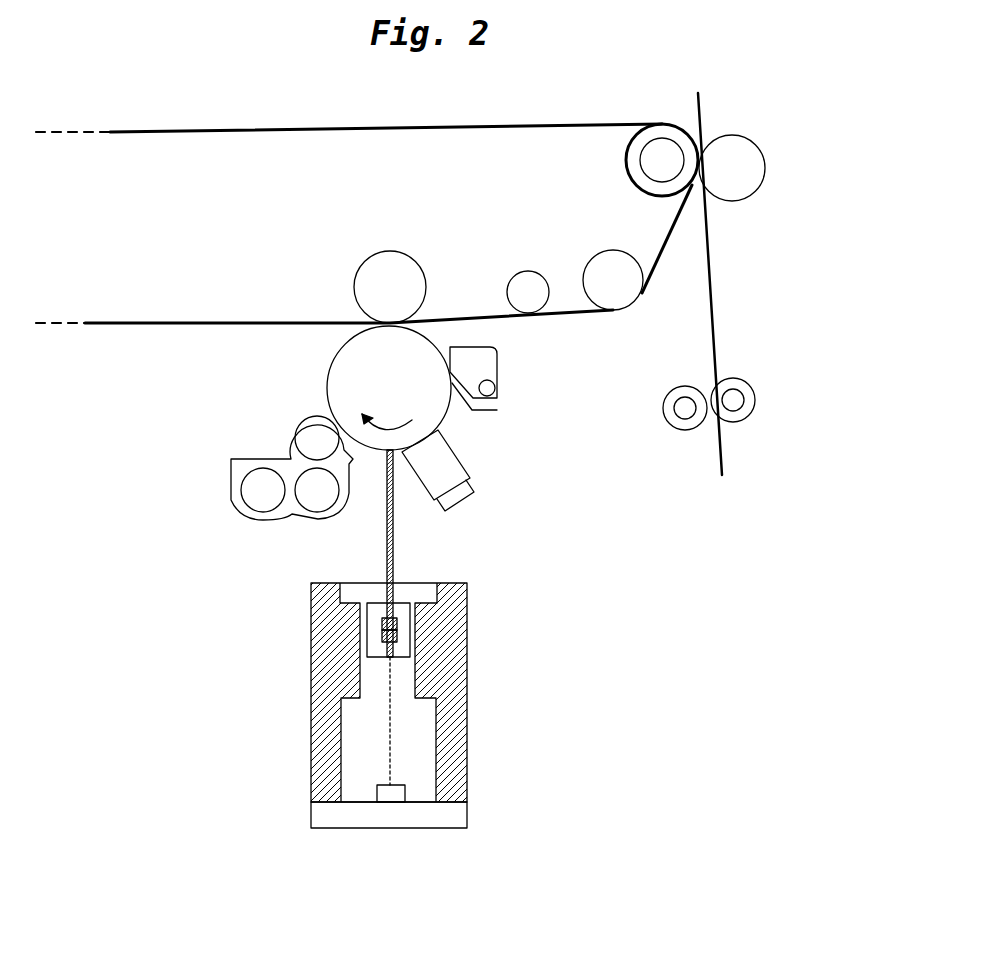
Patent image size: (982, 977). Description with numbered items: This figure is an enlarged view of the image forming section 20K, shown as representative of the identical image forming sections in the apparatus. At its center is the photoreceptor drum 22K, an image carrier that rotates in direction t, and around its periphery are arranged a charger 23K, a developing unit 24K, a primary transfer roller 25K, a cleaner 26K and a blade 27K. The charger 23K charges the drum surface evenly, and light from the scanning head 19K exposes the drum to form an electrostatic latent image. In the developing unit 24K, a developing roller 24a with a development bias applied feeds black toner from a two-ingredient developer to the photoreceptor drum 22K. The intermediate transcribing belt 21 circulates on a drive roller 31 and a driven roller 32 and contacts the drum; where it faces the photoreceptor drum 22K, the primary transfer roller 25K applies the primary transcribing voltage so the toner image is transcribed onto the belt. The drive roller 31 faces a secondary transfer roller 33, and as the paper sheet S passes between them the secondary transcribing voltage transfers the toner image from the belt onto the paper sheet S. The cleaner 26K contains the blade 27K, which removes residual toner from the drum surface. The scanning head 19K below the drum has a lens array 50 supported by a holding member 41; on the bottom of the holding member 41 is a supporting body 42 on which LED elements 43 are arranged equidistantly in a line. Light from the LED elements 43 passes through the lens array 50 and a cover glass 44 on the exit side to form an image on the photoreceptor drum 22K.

The intermediate transcribing belt 21 is at (245, 134).
The drive roller 31 is at (623, 157).
The driven roller 32 is at (587, 267).
The secondary transfer roller 33 is at (765, 178).
The paper sheet S is at (707, 318).
The primary transfer roller 25K is at (381, 250).
The image forming section 20K is at (198, 393).
The photoreceptor drum 22K is at (322, 373).
The charger 23K is at (448, 467).
The developing unit 24K is at (230, 480).
The developing roller 24a is at (300, 440).
The cleaner 26K is at (498, 368).
The blade 27K is at (497, 410).
The scanning head 19K is at (510, 677).
The holding member 41 is at (455, 738).
The supporting body 42 is at (450, 812).
The LED elements 43 is at (377, 790).
The cover glass 44 is at (397, 585).
The lens array 50 is at (402, 627).